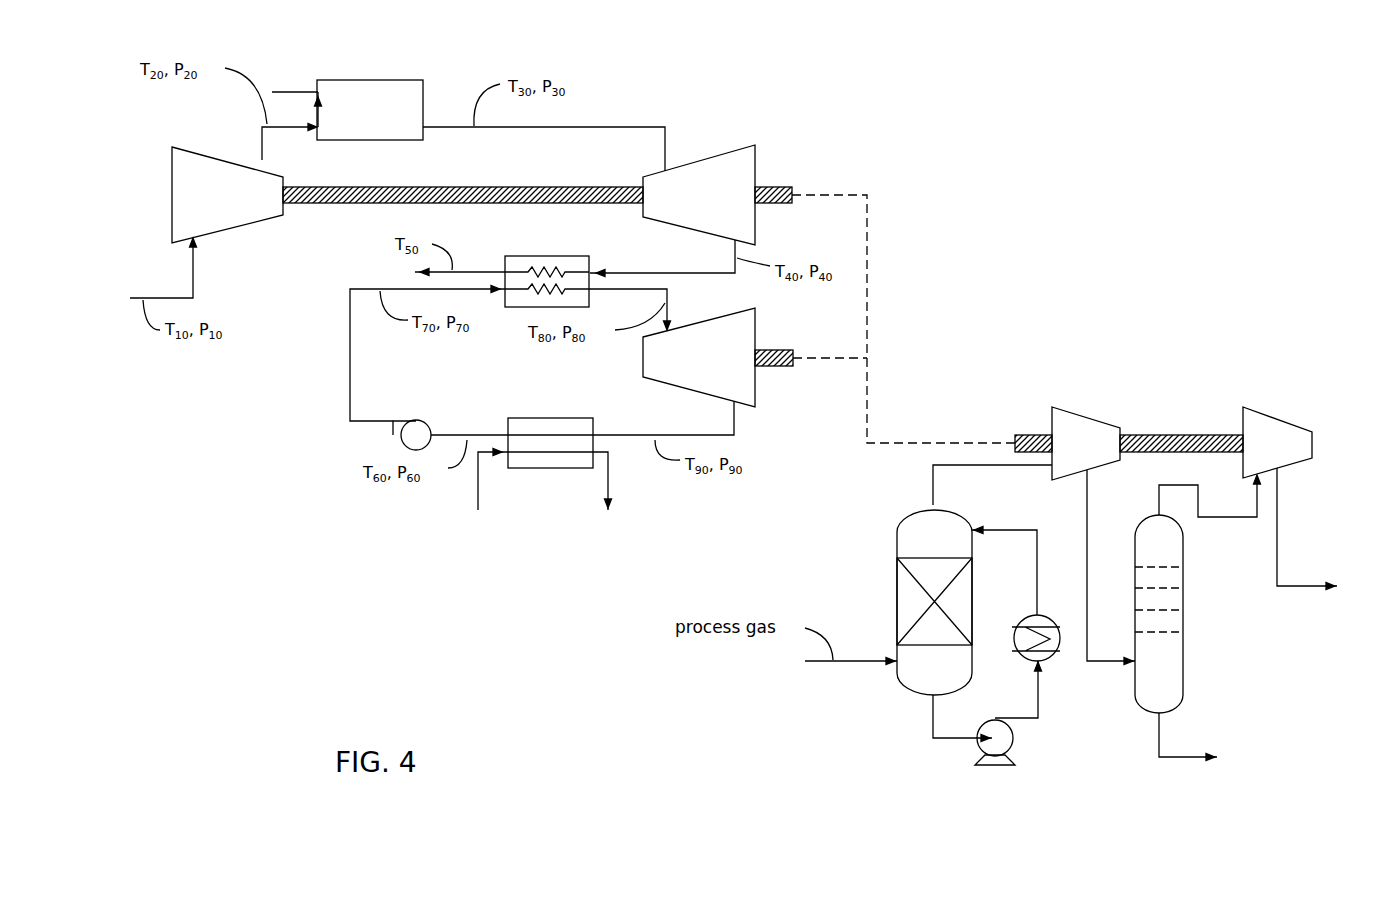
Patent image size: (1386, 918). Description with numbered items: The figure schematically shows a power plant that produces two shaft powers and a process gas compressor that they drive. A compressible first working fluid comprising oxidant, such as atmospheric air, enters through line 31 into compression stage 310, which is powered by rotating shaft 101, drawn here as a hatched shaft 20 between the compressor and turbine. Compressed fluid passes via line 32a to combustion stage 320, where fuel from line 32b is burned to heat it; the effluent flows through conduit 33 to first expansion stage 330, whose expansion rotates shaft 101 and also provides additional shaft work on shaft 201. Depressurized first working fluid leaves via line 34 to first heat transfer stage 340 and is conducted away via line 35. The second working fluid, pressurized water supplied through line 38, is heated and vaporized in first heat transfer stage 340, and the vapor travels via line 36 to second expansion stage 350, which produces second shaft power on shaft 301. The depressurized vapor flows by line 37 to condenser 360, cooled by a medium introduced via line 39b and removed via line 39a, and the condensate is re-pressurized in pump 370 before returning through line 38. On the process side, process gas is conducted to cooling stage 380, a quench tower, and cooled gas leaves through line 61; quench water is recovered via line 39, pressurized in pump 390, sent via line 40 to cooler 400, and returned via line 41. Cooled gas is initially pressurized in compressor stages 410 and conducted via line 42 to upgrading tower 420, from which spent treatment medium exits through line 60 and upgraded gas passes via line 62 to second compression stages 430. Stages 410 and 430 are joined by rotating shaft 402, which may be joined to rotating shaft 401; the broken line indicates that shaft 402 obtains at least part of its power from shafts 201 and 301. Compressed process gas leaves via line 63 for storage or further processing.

The compression stage 310 is at (180, 147).
The combustion stage 320 is at (388, 80).
The first expansion stage 330 is at (733, 151).
The first heat transfer stage 340 is at (530, 256).
The second expansion stage 350 is at (677, 392).
The condenser 360 is at (575, 418).
The pump 370 is at (414, 420).
The cooling stage 380 is at (895, 545).
The pump 390 is at (1003, 767).
The cooler 400 is at (1050, 662).
The compressor stages 410 is at (1072, 407).
The tower 420 is at (1185, 672).
The second compression stages 430 is at (1265, 410).
The shaft 20 is at (350, 205).
The rotating shaft 101 is at (463, 194).
The shaft 201 is at (778, 187).
The shaft 301 is at (770, 367).
The rotating shaft 401 is at (1027, 433).
The rotating shaft 402 is at (1158, 433).
The line 31 is at (195, 271).
The line 32a is at (262, 153).
The line 32b is at (283, 90).
The conduit 33 is at (493, 132).
The line 34 is at (685, 272).
The line 35 is at (472, 270).
The line 36 is at (670, 310).
The line 37 is at (736, 427).
The line 38 is at (348, 400).
The line 39 is at (930, 718).
The line 39a is at (611, 485).
The line 39b is at (476, 500).
The line 40 is at (1030, 722).
The line 41 is at (1000, 528).
The line 42 is at (1090, 493).
The line 60 is at (1185, 760).
The line 61 is at (932, 485).
The line 62 is at (1237, 522).
The line 63 is at (1300, 590).